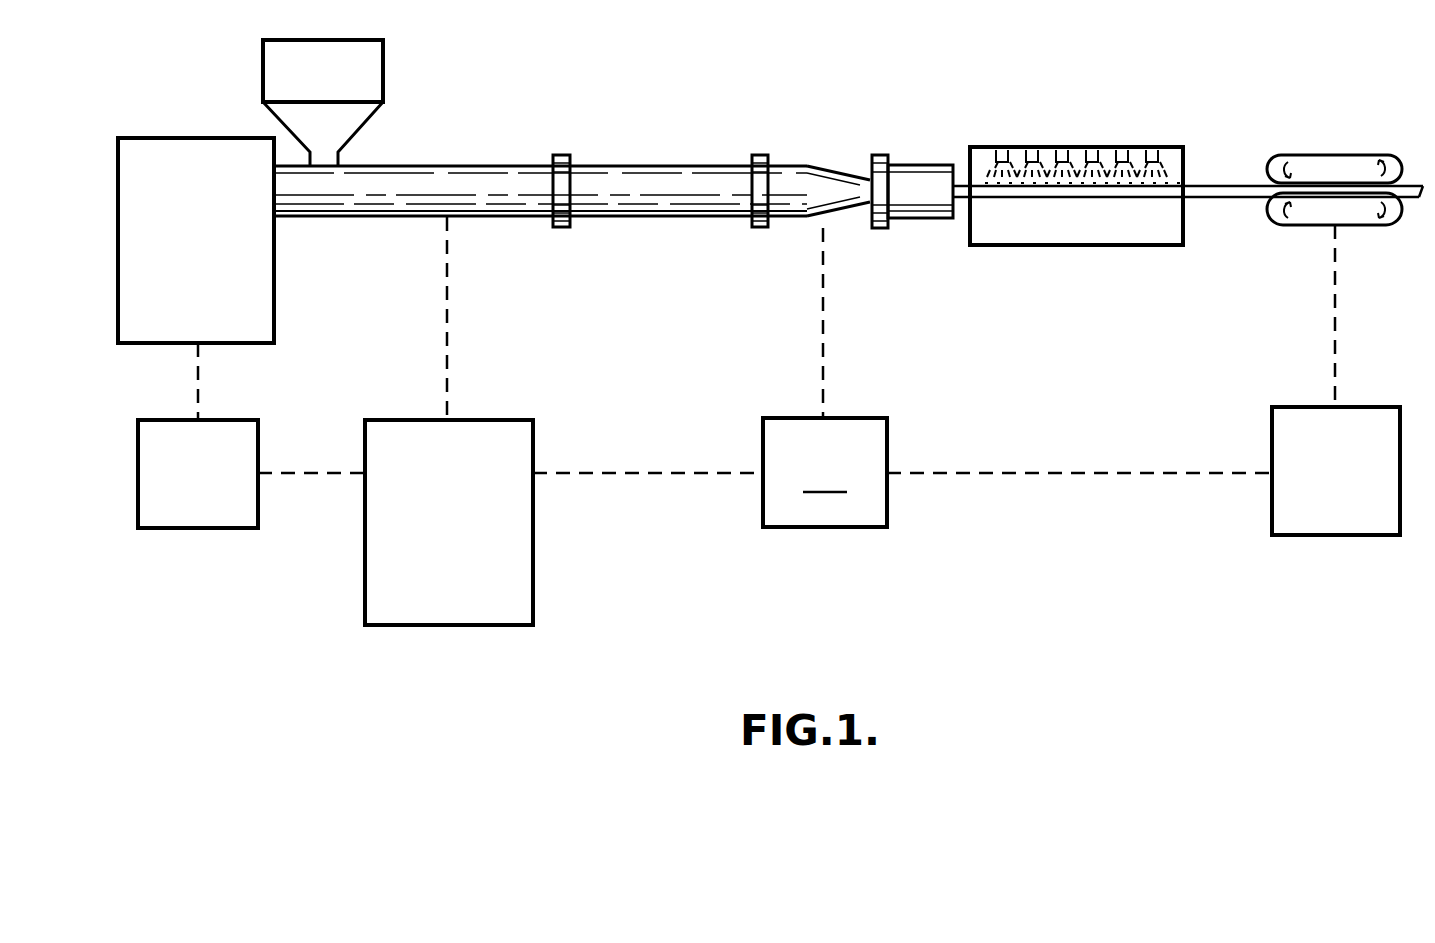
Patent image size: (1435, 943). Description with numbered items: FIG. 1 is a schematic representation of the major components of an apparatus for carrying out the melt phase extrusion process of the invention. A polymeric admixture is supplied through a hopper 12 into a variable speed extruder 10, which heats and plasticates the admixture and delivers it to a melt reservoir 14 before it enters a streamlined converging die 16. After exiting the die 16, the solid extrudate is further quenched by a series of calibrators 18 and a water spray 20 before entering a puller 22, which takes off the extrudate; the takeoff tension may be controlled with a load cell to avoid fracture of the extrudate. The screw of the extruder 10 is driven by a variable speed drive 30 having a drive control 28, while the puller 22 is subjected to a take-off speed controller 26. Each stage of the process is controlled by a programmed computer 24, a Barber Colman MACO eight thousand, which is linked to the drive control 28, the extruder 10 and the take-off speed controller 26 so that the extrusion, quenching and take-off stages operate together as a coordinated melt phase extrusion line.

The variable speed extruder 10 is at (498, 166).
The hopper 12 is at (323, 103).
The melt reservoir 14 is at (676, 166).
The streamlined converging die 16 is at (797, 166).
The calibrators 18 is at (918, 165).
The water spray 20 is at (1113, 245).
The puller 22 is at (1313, 155).
The programmed computer 24 is at (428, 550).
The take-off speed controller 26 is at (1315, 492).
The drive control 28 is at (176, 498).
The variable speed drive 30 is at (176, 274).